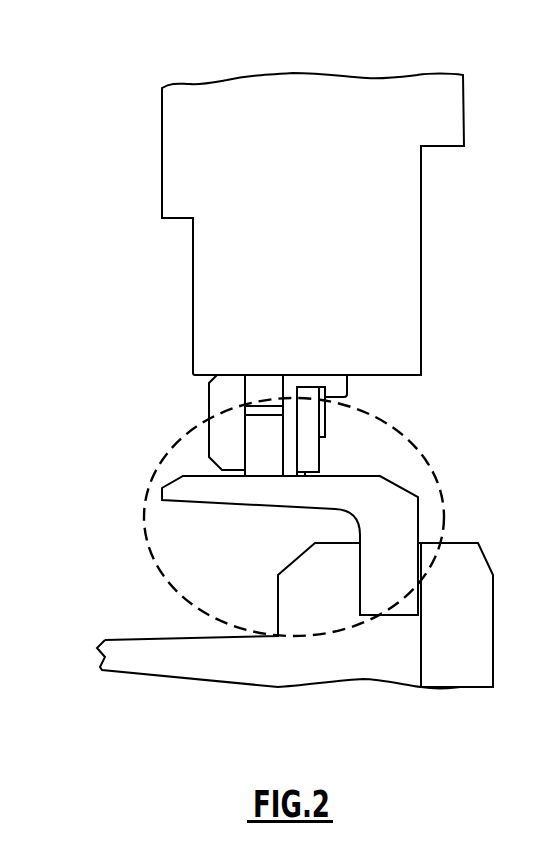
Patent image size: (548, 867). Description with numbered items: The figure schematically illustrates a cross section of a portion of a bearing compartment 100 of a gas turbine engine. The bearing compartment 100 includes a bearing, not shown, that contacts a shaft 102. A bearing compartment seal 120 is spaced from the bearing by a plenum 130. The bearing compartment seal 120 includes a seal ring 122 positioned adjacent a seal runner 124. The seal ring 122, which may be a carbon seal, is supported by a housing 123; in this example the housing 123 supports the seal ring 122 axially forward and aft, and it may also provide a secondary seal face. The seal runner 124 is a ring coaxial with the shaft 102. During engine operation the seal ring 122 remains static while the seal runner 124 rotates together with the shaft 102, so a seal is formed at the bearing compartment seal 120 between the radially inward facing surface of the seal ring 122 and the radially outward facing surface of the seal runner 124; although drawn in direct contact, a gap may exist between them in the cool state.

The bearing compartment 100 is at (99, 48).
The shaft 102 is at (142, 638).
The bearing compartment seal 120 is at (423, 453).
The seal ring 122 is at (282, 453).
The housing 123 is at (217, 395).
The seal runner 124 is at (400, 518).
The plenum 130 is at (155, 418).